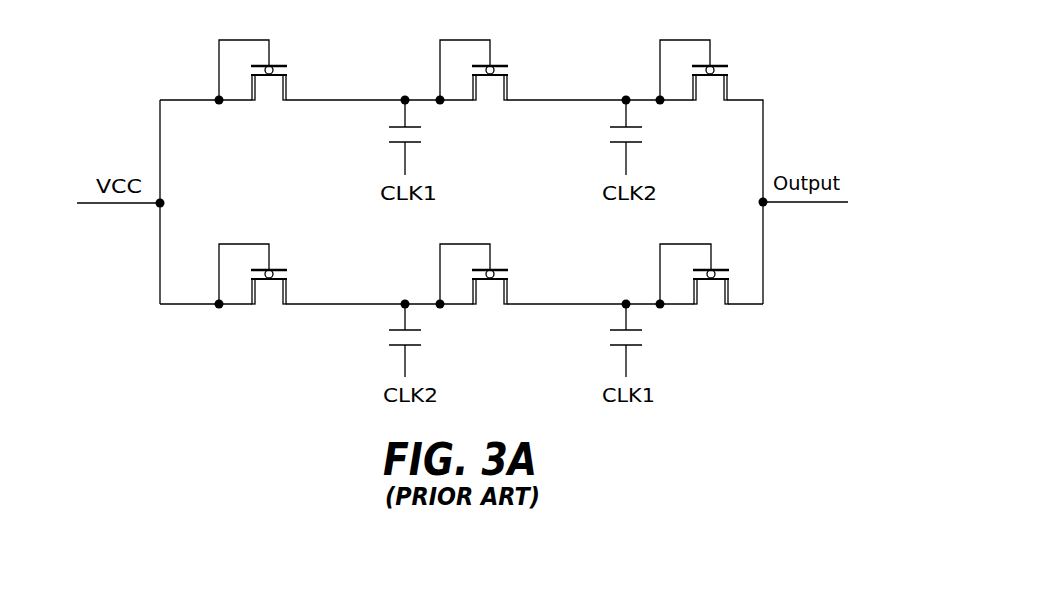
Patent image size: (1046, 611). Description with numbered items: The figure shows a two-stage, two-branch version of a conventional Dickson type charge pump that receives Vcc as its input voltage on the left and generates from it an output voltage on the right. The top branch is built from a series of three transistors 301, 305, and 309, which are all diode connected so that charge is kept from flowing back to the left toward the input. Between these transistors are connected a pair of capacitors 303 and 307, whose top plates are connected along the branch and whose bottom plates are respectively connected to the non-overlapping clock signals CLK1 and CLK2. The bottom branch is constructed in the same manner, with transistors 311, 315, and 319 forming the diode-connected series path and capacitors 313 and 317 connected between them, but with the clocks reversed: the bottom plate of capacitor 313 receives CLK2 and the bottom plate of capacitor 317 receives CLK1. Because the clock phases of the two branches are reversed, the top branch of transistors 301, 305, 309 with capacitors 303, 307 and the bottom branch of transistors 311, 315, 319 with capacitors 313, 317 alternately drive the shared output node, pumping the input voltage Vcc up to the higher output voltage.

The transistor 301 is at (287, 85).
The capacitor 303 is at (397, 145).
The transistor 305 is at (507, 85).
The capacitor 307 is at (618, 145).
The transistor 309 is at (728, 85).
The transistor 311 is at (288, 290).
The capacitor 313 is at (398, 350).
The transistor 315 is at (508, 292).
The capacitor 317 is at (619, 350).
The transistor 319 is at (731, 290).